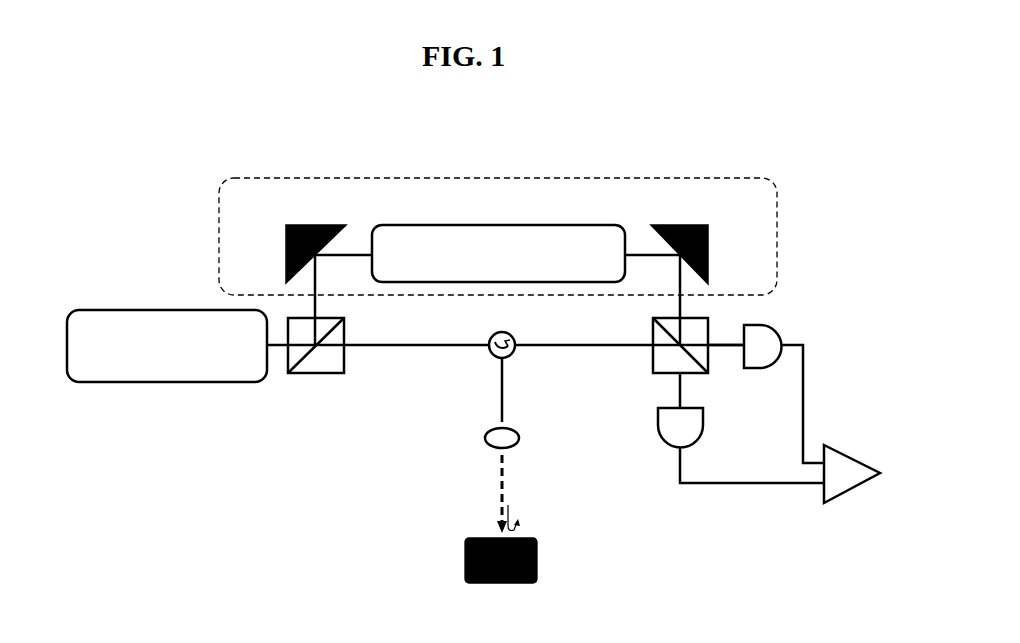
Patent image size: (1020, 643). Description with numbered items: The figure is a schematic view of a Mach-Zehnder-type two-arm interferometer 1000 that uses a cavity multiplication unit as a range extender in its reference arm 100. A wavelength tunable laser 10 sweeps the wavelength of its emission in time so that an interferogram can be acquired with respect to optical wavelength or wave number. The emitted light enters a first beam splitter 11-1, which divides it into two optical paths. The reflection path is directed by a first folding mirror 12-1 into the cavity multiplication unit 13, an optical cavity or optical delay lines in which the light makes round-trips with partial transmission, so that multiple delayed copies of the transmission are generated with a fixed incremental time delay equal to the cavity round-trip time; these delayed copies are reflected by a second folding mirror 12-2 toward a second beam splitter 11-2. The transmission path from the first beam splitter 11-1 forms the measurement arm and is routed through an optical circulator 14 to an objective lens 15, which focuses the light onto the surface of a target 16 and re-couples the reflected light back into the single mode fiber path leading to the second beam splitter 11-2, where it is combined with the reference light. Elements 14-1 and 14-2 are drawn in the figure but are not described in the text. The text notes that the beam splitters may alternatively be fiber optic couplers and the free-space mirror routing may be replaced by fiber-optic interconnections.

The two-arm interferometer 1000 is at (498, 200).
The reference arm 100 is at (782, 250).
The wavelength tunable laser 10 is at (167, 346).
The first beam splitter 11-1 is at (316, 376).
The second beam splitter 11-2 is at (651, 373).
The first folding mirror 12-1 is at (284, 225).
The second folding mirror 12-2 is at (697, 222).
The cavity multiplication unit 13 is at (498, 253).
The optical circulator 14 is at (488, 352).
The first detector 14-1 is at (740, 428).
The second detector 14-2 is at (765, 390).
The objective lens 15 is at (826, 500).
The target 16 is at (478, 519).